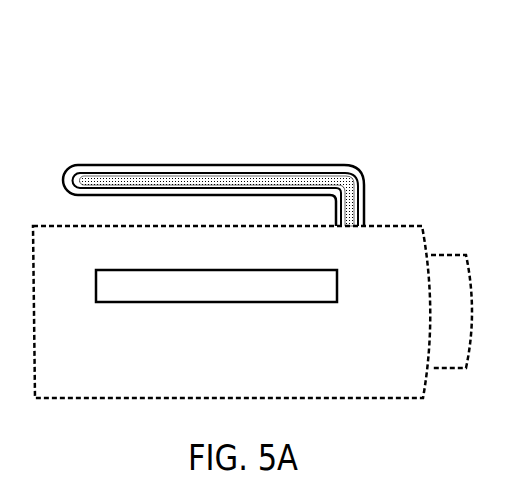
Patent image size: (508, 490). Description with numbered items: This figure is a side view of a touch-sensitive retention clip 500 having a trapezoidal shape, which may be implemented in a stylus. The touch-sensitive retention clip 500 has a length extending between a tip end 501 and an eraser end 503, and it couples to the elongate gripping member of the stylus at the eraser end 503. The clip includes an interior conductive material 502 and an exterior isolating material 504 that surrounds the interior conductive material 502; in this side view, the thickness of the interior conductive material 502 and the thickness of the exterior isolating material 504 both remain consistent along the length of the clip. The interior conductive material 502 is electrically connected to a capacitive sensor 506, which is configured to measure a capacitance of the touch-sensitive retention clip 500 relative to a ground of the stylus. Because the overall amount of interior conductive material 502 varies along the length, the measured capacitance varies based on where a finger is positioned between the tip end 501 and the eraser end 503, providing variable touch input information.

The touch-sensitive retention clip 500 is at (120, 74).
The tip end 501 is at (76, 212).
The interior conductive material 502 is at (115, 181).
The eraser end 503 is at (383, 204).
The exterior isolating material 504 is at (303, 170).
The capacitive sensor 506 is at (353, 222).